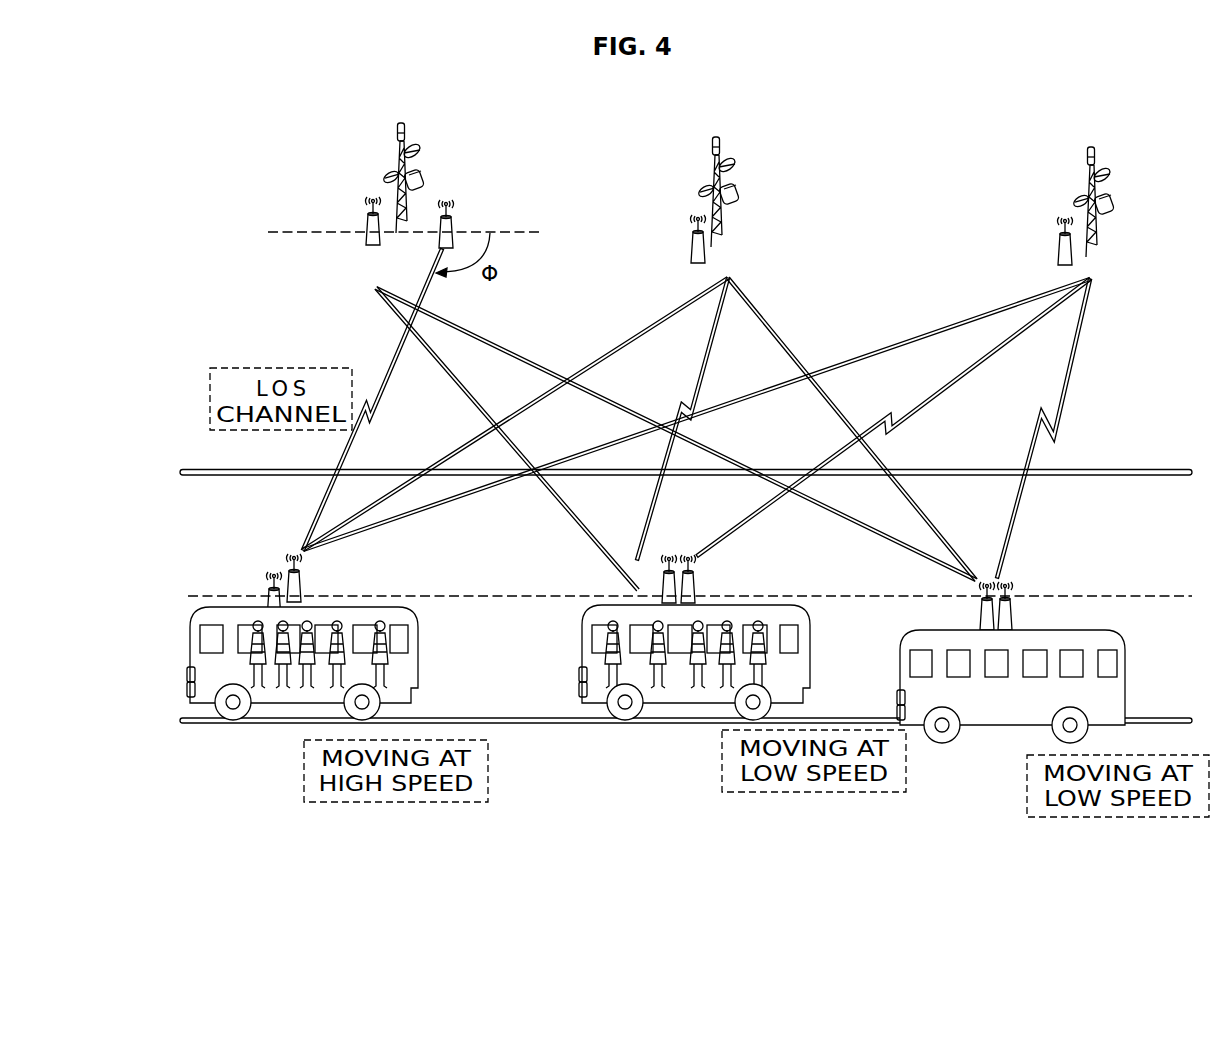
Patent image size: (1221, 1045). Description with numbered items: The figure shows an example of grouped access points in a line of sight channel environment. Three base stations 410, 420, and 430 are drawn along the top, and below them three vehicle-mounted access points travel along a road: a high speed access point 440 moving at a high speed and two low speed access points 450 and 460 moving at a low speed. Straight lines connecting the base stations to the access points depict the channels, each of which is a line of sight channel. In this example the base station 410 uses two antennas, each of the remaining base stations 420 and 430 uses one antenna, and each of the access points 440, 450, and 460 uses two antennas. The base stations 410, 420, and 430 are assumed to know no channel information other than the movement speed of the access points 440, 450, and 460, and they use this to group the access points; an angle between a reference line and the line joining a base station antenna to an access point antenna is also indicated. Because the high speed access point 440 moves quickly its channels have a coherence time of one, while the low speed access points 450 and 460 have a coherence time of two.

The base station 410 is at (404, 121).
The base station 420 is at (722, 136).
The base station 430 is at (1097, 147).
The high speed access point 440 is at (190, 637).
The low speed access point 450 is at (582, 637).
The low speed access point 460 is at (918, 628).